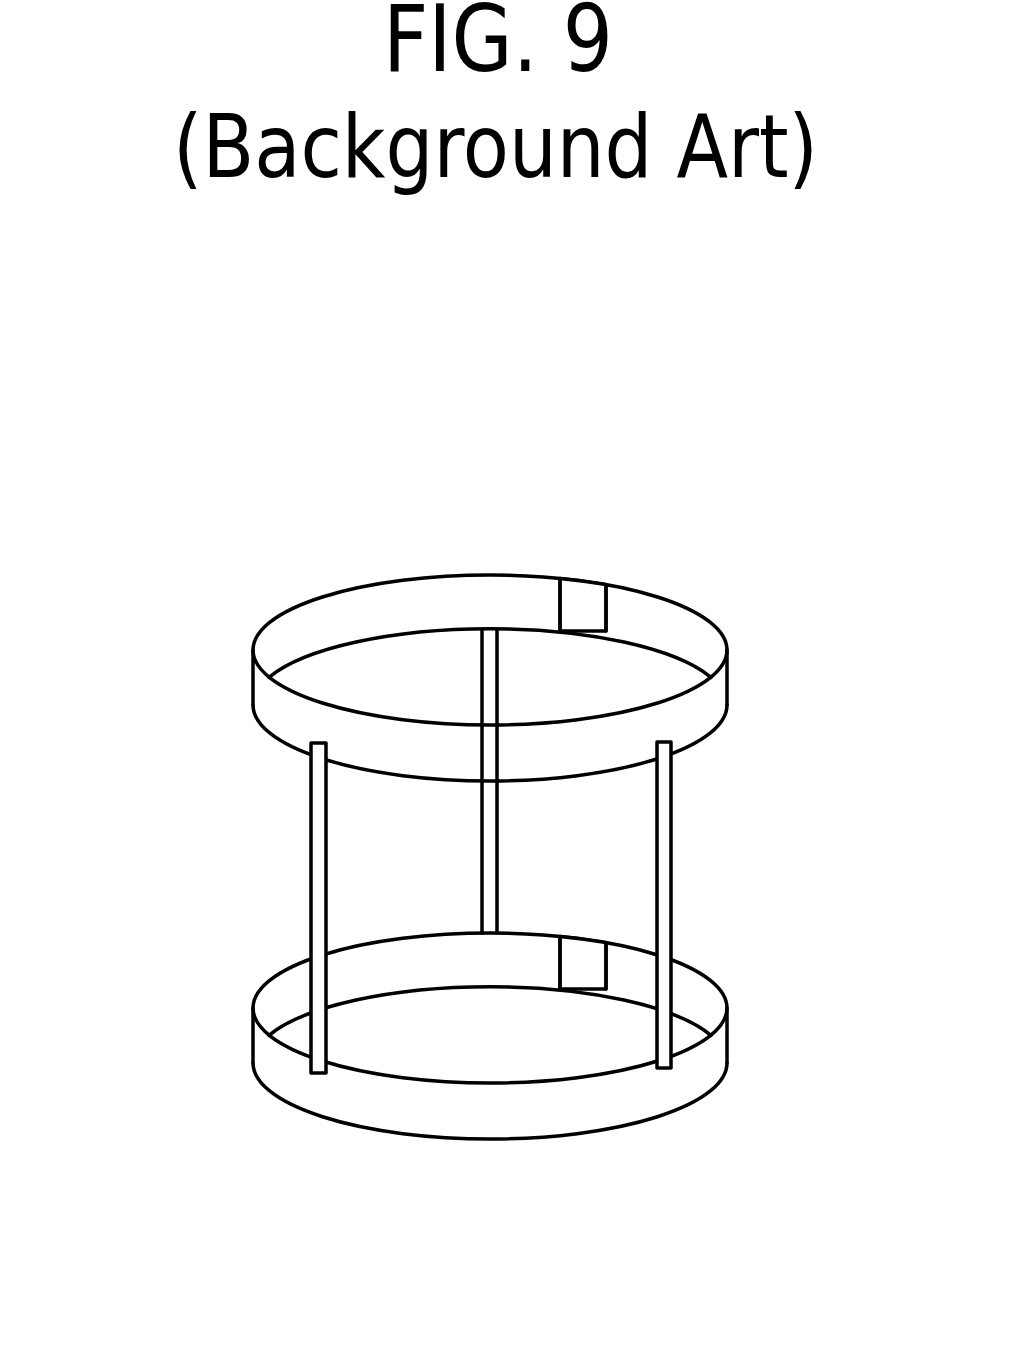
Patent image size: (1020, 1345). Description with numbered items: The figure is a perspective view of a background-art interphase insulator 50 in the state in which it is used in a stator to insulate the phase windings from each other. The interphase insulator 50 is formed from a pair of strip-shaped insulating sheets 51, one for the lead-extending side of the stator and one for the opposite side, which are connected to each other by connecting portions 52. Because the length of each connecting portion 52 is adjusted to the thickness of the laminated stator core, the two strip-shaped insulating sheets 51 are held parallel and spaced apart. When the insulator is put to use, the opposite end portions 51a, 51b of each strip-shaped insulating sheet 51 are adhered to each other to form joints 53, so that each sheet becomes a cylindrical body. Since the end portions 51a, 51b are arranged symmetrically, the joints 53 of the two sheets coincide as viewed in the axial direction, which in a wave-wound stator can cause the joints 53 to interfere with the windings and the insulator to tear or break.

The interphase insulator 50 is at (303, 478).
The strip-shaped insulating sheet 51 is at (263, 655).
The end portion of strip-shaped insulating sheet 51a is at (608, 613).
The end portion of strip-shaped insulating sheet 51b is at (558, 607).
The connecting portion 52 is at (310, 880).
The joint 53 is at (585, 603).